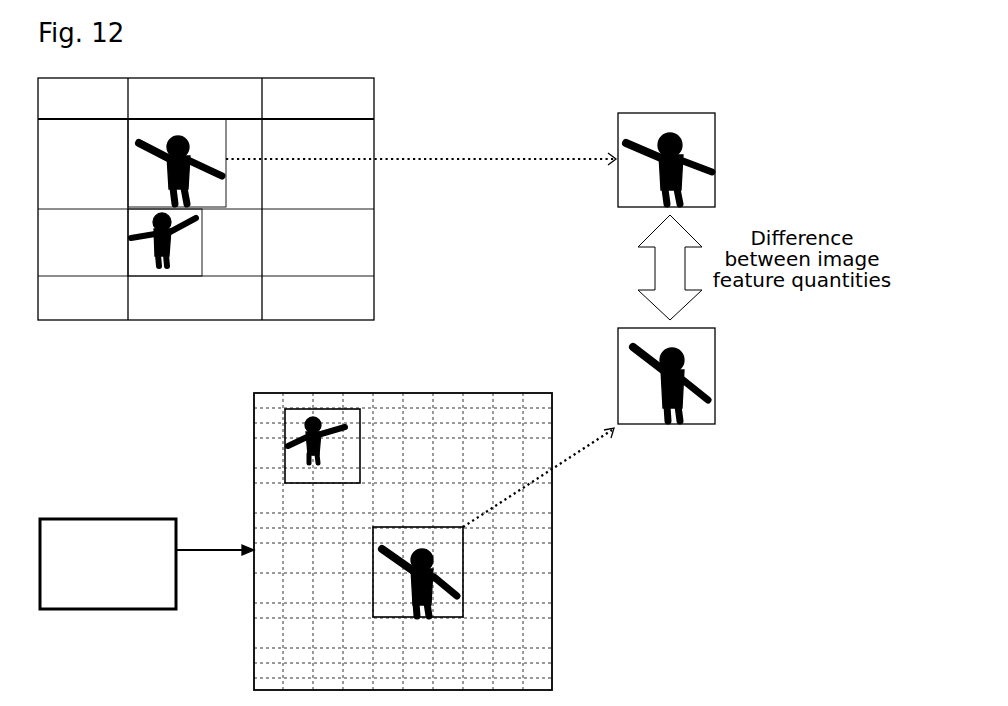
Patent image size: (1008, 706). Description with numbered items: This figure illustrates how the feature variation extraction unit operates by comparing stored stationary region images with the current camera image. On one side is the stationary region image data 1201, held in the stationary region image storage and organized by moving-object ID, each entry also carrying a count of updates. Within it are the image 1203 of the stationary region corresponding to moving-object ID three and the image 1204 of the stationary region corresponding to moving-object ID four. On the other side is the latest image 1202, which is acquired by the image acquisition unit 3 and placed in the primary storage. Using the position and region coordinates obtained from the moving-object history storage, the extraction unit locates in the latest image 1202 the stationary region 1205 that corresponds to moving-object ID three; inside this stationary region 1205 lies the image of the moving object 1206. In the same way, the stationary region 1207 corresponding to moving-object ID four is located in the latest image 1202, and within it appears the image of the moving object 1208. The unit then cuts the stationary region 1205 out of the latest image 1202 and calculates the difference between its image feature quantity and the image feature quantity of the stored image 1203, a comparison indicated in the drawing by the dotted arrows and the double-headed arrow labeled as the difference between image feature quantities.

The image acquisition unit 3 is at (128, 519).
The stationary region image data 1201 is at (292, 78).
The latest image 1202 is at (468, 393).
The image of the stationary region corresponding to moving-object ID3 1203 is at (118, 193).
The image of the stationary region corresponding to moving-object ID4 1204 is at (125, 269).
The stationary region 1205 is at (716, 393).
The moving object 1206 is at (419, 555).
The stationary region 1207 is at (360, 437).
The moving object 1208 is at (318, 422).